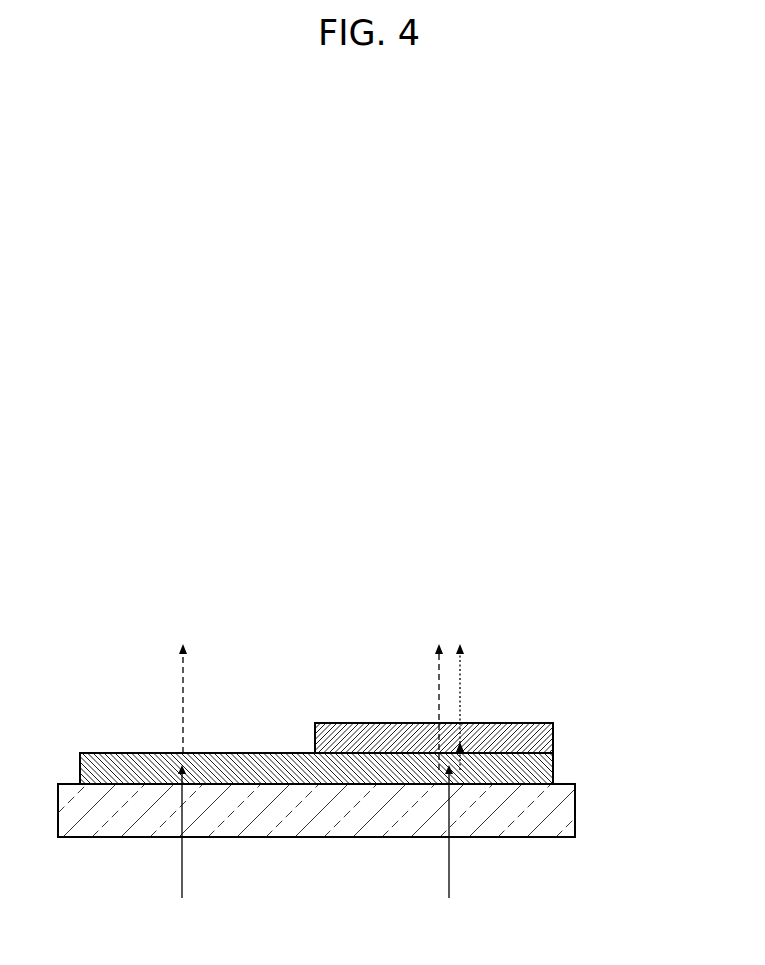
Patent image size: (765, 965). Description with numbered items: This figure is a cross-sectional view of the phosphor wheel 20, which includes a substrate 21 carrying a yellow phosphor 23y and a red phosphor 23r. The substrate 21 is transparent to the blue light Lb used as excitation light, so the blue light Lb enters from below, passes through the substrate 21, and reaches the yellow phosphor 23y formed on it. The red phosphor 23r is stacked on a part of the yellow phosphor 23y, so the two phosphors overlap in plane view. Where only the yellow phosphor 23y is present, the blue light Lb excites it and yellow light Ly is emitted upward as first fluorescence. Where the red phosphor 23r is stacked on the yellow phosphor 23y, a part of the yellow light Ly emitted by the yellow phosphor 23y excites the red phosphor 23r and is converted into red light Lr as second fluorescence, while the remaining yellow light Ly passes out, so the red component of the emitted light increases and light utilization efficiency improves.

The phosphor wheel 20 is at (561, 640).
The substrate 21 is at (565, 818).
The yellow phosphor 23y is at (147, 753).
The red phosphor 23r is at (352, 723).
The blue light Lb is at (182, 870).
The yellow light Ly is at (181, 683).
The red light Lr is at (462, 682).